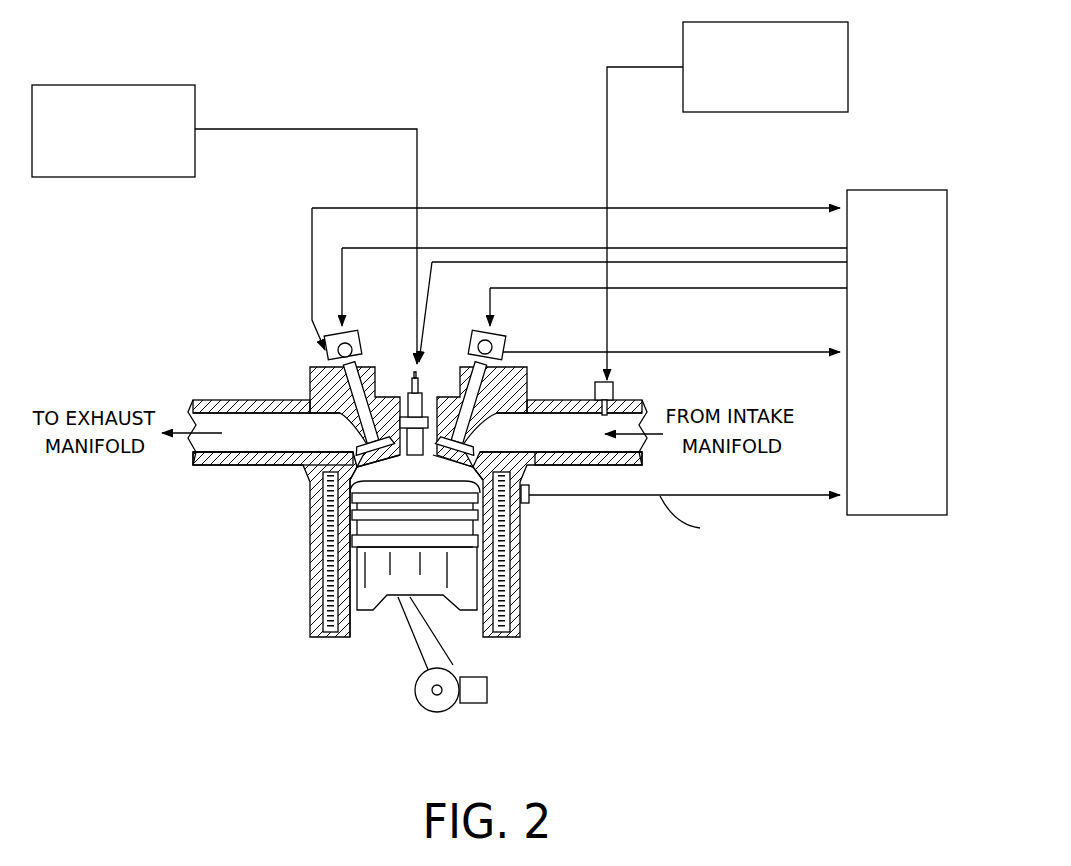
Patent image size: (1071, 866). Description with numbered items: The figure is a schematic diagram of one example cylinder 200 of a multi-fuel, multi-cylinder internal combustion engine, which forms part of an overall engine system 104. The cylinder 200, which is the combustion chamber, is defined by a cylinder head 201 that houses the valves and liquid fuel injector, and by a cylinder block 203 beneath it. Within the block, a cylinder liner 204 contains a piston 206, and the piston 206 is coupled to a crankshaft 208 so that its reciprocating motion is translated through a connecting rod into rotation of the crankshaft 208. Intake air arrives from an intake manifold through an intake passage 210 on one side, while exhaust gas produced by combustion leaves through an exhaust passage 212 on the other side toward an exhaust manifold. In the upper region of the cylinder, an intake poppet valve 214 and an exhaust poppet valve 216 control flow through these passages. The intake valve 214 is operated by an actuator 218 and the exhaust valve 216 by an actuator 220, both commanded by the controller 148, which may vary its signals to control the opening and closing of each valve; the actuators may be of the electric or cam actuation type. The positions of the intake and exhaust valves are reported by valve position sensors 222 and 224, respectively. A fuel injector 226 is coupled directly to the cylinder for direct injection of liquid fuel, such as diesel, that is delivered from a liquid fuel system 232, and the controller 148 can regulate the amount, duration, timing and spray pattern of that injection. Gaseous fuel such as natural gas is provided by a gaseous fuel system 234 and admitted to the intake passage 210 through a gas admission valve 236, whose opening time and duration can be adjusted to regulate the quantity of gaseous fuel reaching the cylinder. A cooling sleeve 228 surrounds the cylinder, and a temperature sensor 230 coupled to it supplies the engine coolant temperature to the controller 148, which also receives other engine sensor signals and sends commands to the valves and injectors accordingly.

The engine system 104 is at (457, 182).
The controller 148 is at (878, 366).
The cylinder 200 is at (396, 491).
The cylinder head 201 is at (246, 325).
The cylinder block 203 is at (581, 578).
The cylinder liner 204 is at (357, 620).
The piston 206 is at (397, 582).
The crankshaft 208 is at (459, 677).
The intake passage 210 is at (535, 444).
The exhaust passage 212 is at (275, 446).
The intake poppet valve 214 is at (467, 447).
The exhaust poppet valve 216 is at (367, 447).
The actuator 218 is at (476, 330).
The actuator 220 is at (356, 330).
The valve position sensor 222 is at (502, 350).
The valve position sensor 224 is at (327, 353).
The fuel injector 226 is at (410, 383).
The cooling sleeve 228 is at (503, 583).
The temperature sensor 230 is at (529, 505).
The liquid fuel system 232 is at (97, 170).
The gaseous fuel system 234 is at (749, 106).
The gas admission valve 236 is at (613, 392).